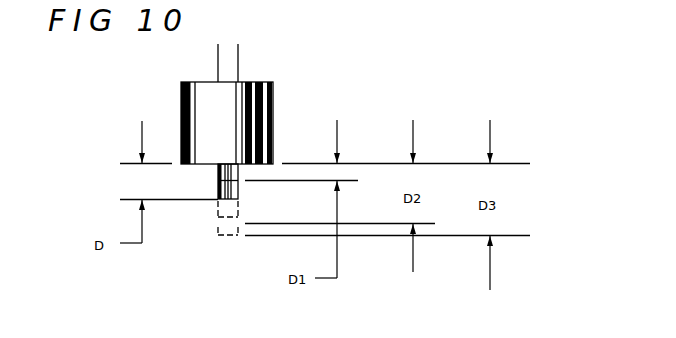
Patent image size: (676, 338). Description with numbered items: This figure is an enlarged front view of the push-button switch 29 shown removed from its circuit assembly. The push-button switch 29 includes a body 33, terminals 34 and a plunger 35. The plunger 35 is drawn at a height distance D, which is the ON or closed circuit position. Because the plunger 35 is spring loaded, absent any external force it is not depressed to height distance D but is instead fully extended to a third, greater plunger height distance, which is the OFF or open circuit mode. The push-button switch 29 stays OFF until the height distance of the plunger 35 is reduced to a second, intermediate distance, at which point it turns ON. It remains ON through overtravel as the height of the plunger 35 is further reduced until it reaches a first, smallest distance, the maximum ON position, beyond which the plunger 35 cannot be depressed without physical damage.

The push-button switch 29 is at (498, 12).
The body 33 is at (273, 108).
The terminals 34 is at (241, 63).
The plunger 35 is at (218, 195).